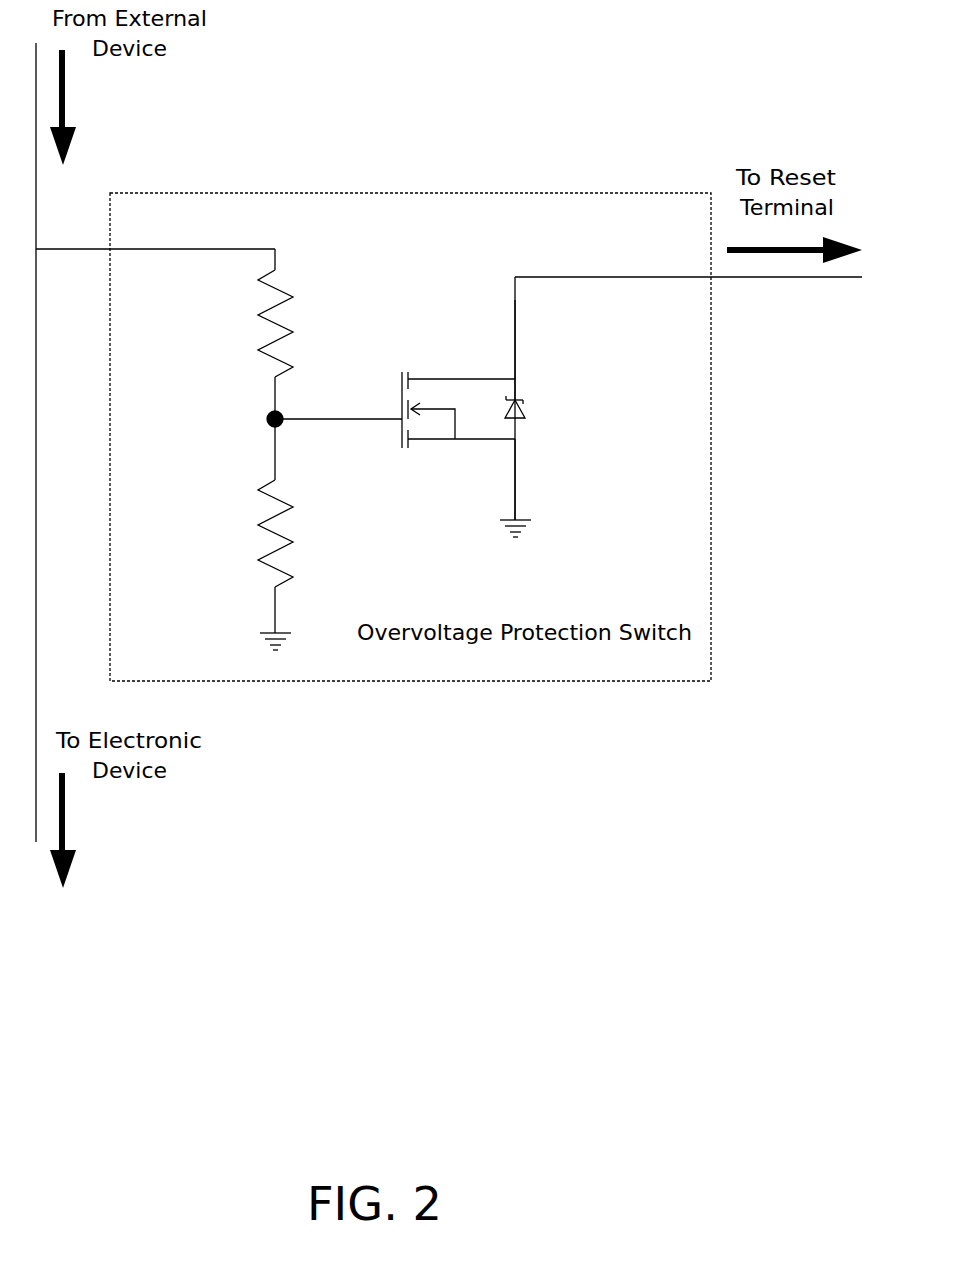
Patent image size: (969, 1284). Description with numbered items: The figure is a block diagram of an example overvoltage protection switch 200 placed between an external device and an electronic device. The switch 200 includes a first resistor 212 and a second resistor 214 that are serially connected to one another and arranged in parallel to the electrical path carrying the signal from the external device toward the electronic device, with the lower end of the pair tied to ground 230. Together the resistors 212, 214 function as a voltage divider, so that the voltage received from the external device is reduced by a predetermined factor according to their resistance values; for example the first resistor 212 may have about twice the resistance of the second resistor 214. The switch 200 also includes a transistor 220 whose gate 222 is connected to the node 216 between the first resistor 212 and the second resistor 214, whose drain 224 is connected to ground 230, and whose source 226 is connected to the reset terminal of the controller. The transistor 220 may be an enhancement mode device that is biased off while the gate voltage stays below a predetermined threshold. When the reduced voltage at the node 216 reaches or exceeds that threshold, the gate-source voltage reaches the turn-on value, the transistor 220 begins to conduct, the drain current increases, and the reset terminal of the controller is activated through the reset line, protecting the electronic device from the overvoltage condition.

The overvoltage protection switch 200 is at (391, 974).
The first resistor 212 is at (268, 270).
The second resistor 214 is at (262, 483).
The node 216 is at (262, 410).
The transistor 220 is at (443, 358).
The gate 222 is at (383, 430).
The drain 224 is at (520, 457).
The source 226 is at (522, 363).
The ground 230 is at (263, 630).